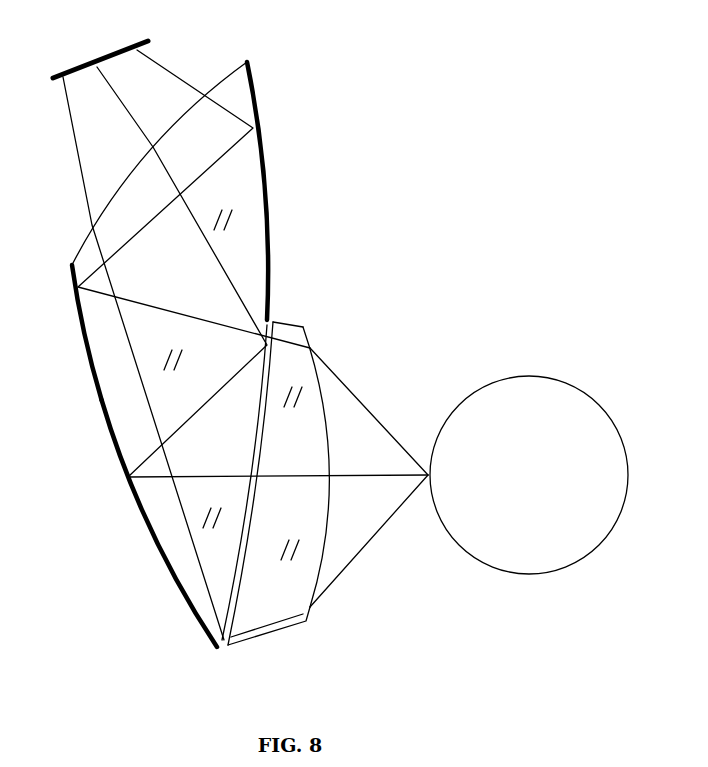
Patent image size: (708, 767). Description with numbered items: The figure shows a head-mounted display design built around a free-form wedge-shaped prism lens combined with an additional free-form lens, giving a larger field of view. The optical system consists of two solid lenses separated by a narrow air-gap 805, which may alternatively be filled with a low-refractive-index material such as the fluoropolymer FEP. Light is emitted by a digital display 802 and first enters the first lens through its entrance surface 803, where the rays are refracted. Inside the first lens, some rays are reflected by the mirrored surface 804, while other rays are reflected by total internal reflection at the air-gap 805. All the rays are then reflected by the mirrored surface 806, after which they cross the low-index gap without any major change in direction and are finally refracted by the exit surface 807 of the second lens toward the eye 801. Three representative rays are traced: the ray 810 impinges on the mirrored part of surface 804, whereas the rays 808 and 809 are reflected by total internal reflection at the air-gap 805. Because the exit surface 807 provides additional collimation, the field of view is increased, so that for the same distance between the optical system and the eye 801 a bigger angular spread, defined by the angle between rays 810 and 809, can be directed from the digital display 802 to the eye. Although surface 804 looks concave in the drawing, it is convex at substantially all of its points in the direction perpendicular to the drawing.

The eye 801 is at (527, 375).
The digital display 802 is at (75, 67).
The entrance surface 803 is at (82, 247).
The mirrored surface 804 is at (270, 193).
The air-gap 805 is at (303, 461).
The mirrored surface 806 is at (108, 440).
The exit surface 807 is at (332, 503).
The ray 808 is at (382, 473).
The ray 809 is at (353, 557).
The ray 810 is at (348, 387).